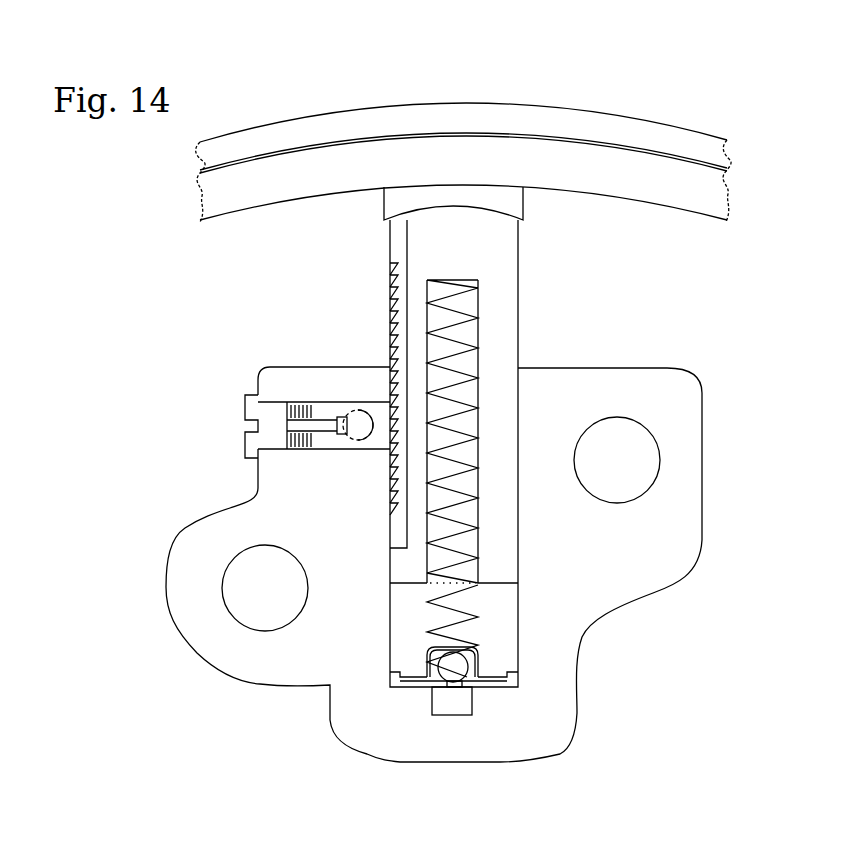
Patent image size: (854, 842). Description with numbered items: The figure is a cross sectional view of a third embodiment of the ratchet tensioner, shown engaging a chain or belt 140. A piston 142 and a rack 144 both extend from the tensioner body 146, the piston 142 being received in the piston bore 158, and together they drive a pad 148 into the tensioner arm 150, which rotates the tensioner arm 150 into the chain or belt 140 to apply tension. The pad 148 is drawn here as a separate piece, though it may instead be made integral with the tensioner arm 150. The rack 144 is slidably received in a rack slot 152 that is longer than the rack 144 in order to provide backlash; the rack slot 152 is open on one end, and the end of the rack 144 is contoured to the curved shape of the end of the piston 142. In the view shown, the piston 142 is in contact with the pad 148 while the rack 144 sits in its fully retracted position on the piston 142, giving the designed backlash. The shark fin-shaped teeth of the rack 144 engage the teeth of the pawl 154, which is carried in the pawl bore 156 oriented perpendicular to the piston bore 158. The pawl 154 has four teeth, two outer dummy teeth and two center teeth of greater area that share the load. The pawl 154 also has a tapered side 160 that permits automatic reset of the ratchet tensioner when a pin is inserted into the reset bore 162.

The chain or belt 140 is at (547, 122).
The tensioner arm 150 is at (431, 170).
The piston 142 is at (433, 252).
The pad 148 is at (512, 200).
The rack 144 is at (397, 262).
The rack slot 152 is at (410, 302).
The tensioner body 146 is at (559, 580).
The piston bore 158 is at (517, 427).
The pawl bore 156 is at (333, 450).
The pawl 154 is at (330, 412).
The reset bore 162 is at (345, 412).
The tapered side 160 is at (368, 410).